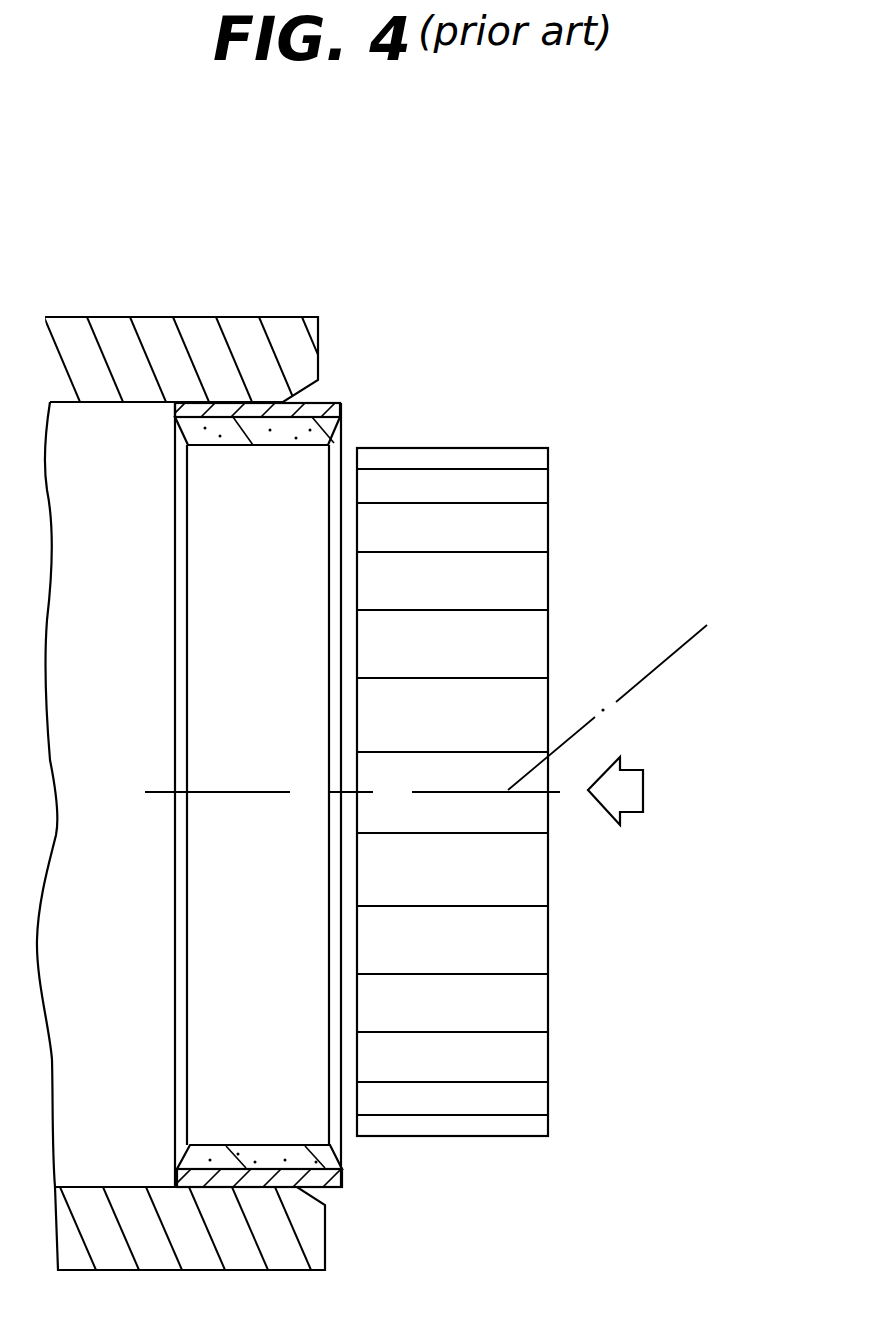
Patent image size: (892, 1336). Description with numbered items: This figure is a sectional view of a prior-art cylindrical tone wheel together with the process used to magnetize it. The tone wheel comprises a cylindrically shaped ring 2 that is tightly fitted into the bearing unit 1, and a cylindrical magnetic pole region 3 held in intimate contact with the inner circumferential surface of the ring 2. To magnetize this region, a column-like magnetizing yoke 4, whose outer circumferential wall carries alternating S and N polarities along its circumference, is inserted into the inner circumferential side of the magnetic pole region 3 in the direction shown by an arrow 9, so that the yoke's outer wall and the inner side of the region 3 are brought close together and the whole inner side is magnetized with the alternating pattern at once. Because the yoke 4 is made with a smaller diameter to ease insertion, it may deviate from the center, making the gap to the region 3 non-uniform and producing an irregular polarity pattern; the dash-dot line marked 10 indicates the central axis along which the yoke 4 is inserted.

The bearing unit 1 is at (145, 352).
The cylindrically shaped ring 2 is at (338, 400).
The cylindrical magnetic pole region 3 is at (204, 793).
The column-like magnetizing yoke 4 is at (510, 792).
The arrow 9 is at (632, 787).
The center axis 10 is at (636, 681).